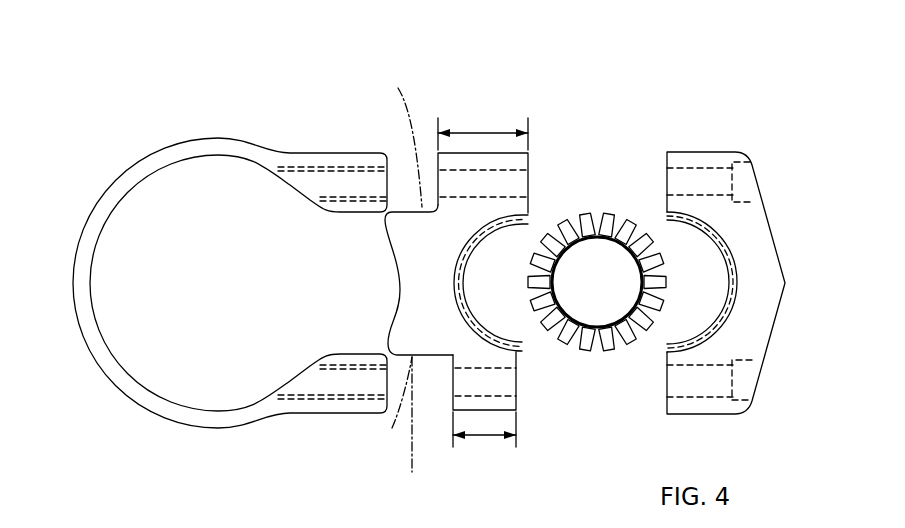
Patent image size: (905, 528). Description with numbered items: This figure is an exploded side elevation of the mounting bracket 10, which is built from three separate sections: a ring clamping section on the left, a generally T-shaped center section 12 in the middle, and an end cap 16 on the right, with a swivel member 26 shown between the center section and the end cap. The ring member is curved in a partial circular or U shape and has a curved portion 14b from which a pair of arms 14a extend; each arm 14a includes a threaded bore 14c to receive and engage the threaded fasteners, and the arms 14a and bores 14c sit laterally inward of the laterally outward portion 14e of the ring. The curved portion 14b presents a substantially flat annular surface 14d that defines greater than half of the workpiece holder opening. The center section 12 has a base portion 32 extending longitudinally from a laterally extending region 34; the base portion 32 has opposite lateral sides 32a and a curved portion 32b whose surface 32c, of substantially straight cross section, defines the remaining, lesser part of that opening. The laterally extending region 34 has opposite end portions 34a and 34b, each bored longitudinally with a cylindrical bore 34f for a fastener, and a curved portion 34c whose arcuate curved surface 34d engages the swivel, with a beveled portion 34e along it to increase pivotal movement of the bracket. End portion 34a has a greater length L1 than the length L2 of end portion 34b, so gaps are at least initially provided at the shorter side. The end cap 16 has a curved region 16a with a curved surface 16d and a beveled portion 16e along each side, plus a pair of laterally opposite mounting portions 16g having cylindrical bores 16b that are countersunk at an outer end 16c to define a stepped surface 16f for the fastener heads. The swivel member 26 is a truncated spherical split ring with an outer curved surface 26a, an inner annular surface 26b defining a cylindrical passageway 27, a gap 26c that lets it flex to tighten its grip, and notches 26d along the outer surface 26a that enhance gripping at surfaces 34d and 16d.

The mounting bracket 10 is at (293, 56).
The center section 12 is at (462, 281).
The arms 14a is at (352, 152).
The curved portion 14b is at (78, 268).
The threaded bore 14c is at (385, 177).
The annular surface 14d is at (108, 348).
The laterally outward portion 14e is at (210, 138).
The end cap 16 is at (794, 290).
The curved region 16a is at (736, 234).
The cylindrical bores 16b is at (682, 388).
The outer end 16c is at (762, 198).
The curved surface 16d is at (740, 295).
The beveled portion 16e is at (734, 254).
The stepped surface 16f is at (750, 177).
The mounting portions 16g is at (708, 152).
The swivel member 26 is at (606, 262).
The outer curved surface 26a is at (582, 215).
The inner annular surface 26b is at (595, 353).
The gap 26c is at (647, 232).
The notches 26d is at (608, 350).
The passageway 27 is at (613, 294).
The base portion 32 is at (425, 312).
The lateral sides 32a is at (396, 269).
The curved portion 32b is at (397, 248).
The surface 32c is at (400, 290).
The laterally extending region 34 is at (500, 281).
The end portion 34a is at (438, 150).
The end portion 34b is at (452, 412).
The curved portion 34c is at (478, 302).
The curved surface 34d is at (470, 276).
The beveled portion 34e is at (522, 352).
The cylindrical bores 34f is at (518, 174).
The length L1 is at (487, 128).
The length L2 is at (482, 442).